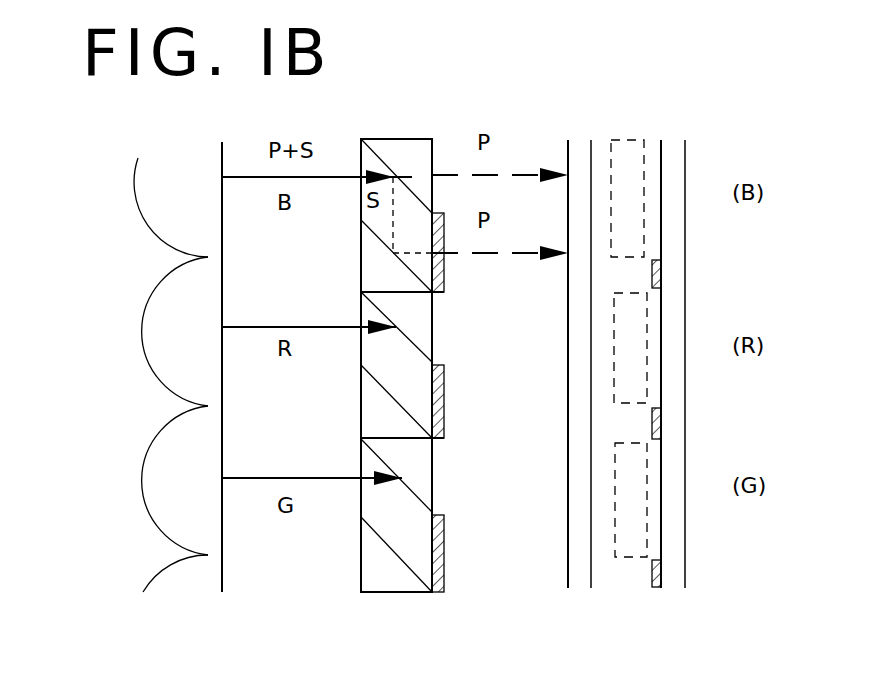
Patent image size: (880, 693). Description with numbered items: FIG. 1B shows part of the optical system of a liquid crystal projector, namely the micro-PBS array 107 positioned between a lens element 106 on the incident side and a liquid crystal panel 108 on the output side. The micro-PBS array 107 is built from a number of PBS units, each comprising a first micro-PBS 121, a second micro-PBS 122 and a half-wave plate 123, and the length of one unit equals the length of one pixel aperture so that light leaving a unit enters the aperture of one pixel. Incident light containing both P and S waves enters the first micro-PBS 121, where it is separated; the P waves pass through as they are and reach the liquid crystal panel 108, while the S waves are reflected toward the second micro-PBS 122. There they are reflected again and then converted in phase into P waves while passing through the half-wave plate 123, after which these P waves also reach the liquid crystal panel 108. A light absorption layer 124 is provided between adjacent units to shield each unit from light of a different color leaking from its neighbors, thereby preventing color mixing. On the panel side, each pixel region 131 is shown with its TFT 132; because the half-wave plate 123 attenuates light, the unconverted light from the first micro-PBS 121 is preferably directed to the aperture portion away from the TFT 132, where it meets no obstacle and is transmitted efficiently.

The lens array 106 is at (178, 600).
The micro-PBS array 107 is at (388, 359).
The liquid crystal panel 108 is at (671, 359).
The first micro-PBS 121 is at (392, 155).
The second micro-PBS 122 is at (372, 242).
The half-wave plate 123 is at (442, 288).
The light absorption layer 124 is at (413, 298).
The pixel electrode 131 is at (631, 152).
The TFT 132 is at (660, 270).